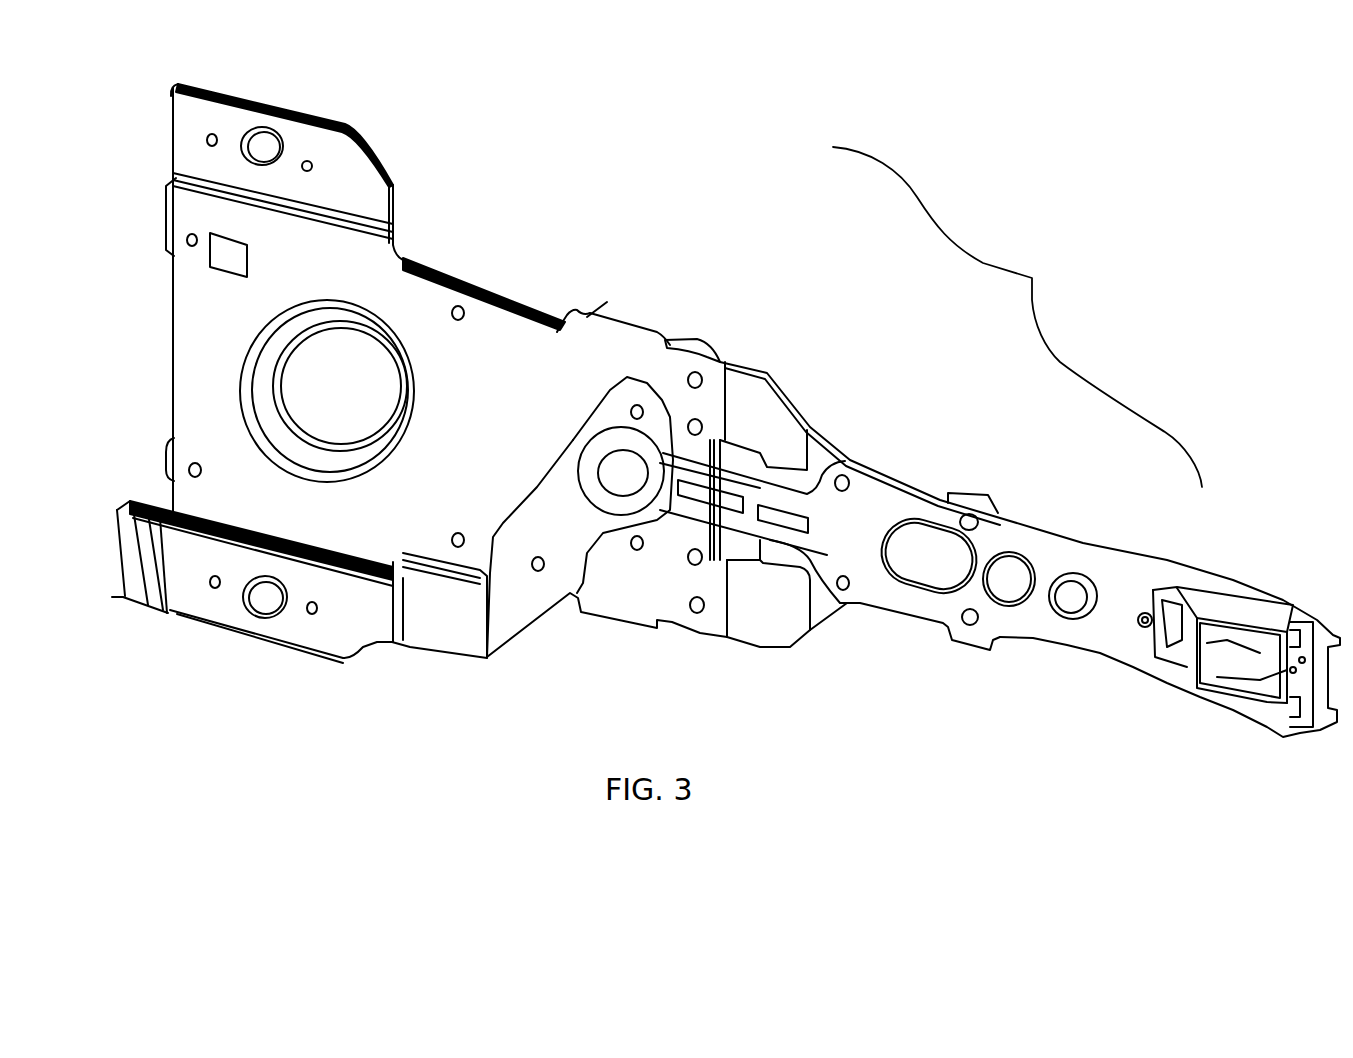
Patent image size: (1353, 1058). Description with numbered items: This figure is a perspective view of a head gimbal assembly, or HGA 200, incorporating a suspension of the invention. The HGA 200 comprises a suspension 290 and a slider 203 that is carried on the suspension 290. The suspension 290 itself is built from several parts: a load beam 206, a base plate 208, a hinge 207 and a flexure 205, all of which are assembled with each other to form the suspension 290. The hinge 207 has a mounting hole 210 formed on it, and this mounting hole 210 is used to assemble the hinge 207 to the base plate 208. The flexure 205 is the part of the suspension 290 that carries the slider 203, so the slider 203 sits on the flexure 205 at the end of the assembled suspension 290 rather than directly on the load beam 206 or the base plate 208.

The HGA 200 is at (726, 410).
The slider 203 is at (1214, 666).
The flexure 205 is at (1052, 564).
The load beam 206 is at (825, 451).
The hinge 207 is at (750, 415).
The base plate 208 is at (713, 343).
The mounting hole 210 is at (320, 428).
The suspension 290 is at (1017, 317).